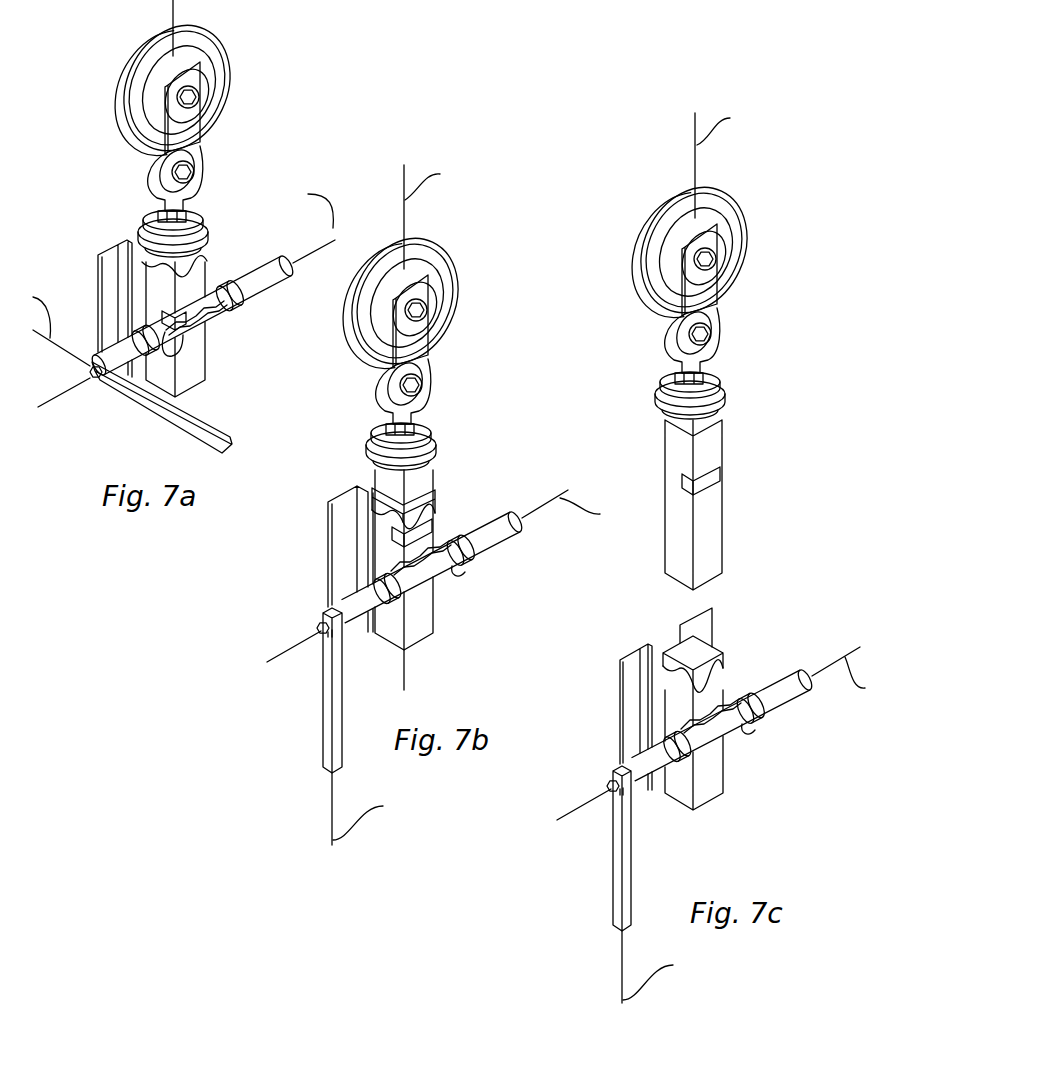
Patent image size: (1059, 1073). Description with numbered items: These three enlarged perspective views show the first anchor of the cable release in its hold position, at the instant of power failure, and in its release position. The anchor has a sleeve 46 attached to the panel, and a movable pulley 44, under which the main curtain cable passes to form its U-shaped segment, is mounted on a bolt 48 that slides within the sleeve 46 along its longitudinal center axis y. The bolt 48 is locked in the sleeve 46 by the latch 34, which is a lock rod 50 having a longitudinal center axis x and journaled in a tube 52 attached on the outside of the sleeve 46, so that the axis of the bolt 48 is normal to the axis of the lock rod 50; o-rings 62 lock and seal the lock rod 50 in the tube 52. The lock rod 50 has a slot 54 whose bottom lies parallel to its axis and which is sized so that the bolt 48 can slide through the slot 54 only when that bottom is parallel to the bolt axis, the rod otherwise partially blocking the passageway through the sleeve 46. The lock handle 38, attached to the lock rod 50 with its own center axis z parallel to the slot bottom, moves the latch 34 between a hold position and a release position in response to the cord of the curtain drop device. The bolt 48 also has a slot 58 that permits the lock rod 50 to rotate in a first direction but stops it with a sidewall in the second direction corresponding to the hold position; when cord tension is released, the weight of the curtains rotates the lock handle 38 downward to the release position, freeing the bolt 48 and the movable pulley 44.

In FIG. 7A, the latch 34 is at (175, 226).
In FIG. 7B, the latch 34 is at (435, 504).
In FIG. 7C, the latch 34 is at (709, 555).
In FIG. 7A, the lock handle 38 is at (177, 427).
In FIG. 7B, the lock handle 38 is at (322, 718).
In FIG. 7C, the lock handle 38 is at (612, 876).
In FIG. 7A, the movable pulley 44 is at (225, 52).
In FIG. 7B, the movable pulley 44 is at (455, 268).
In FIG. 7C, the movable pulley 44 is at (745, 215).
In FIG. 7A, the sleeve 46 is at (118, 268).
In FIG. 7B, the sleeve 46 is at (423, 482).
In FIG. 7C, the sleeve 46 is at (727, 662).
In FIG. 7A, the bolt 48 is at (175, 329).
In FIG. 7B, the bolt 48 is at (453, 460).
In FIG. 7C, the bolt 48 is at (722, 532).
In FIG. 7A, the lock rod 50 is at (276, 296).
In FIG. 7B, the lock rod 50 is at (503, 543).
In FIG. 7C, the lock rod 50 is at (800, 703).
In FIG. 7A, the tube 52 is at (235, 335).
In FIG. 7B, the tube 52 is at (457, 577).
In FIG. 7C, the tube 52 is at (748, 735).
In FIG. 7B, the slot 54 is at (410, 566).
In FIG. 7C, the slot 54 is at (700, 722).
In FIG. 7A, the slot 58 is at (174, 320).
In FIG. 7B, the slot 58 is at (400, 563).
In FIG. 7C, the slot 58 is at (722, 468).
In FIG. 7A, the o-rings 62 is at (143, 332).
In FIG. 7B, the o-rings 62 is at (452, 540).
In FIG. 7C, the o-rings 62 is at (752, 700).